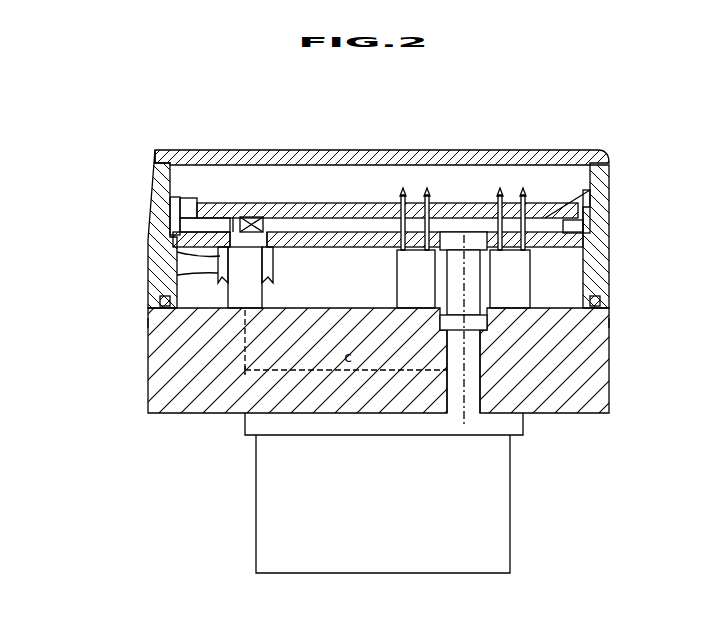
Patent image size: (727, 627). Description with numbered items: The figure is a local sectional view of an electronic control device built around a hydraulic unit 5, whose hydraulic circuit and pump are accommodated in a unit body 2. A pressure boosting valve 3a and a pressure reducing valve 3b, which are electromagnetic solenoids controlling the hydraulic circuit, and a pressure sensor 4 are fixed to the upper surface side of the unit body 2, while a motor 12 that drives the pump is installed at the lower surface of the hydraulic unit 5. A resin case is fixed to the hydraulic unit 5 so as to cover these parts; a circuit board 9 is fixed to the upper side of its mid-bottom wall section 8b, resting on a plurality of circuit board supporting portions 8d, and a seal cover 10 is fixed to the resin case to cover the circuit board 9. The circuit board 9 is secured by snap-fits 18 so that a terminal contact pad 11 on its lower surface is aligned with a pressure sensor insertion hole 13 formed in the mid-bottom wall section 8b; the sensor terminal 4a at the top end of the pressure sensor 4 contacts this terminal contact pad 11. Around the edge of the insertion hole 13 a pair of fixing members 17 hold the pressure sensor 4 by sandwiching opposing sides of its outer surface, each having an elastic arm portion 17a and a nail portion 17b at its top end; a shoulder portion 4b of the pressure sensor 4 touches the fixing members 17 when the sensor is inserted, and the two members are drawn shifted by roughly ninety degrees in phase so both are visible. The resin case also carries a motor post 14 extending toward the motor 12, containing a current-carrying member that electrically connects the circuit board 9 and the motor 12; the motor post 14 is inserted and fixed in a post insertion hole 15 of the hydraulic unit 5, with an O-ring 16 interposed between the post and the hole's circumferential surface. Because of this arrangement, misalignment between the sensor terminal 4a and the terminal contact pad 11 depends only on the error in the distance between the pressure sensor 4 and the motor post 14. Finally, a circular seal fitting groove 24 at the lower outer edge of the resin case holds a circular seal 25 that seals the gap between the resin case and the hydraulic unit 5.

The unit body 2 is at (153, 370).
The pressure boosting valve 3a is at (397, 279).
The pressure reducing valve 3b is at (533, 280).
The pressure sensor 4 is at (262, 295).
The sensor terminal 4a is at (277, 232).
The shoulder portion 4b is at (175, 240).
The hydraulic unit 5 is at (135, 400).
The mid-bottom wall section 8b is at (330, 232).
The circuit board supporting portions 8d is at (202, 215).
The circuit board 9 is at (372, 203).
The seal cover 10 is at (420, 163).
The terminal contact pad 11 is at (260, 217).
The motor 12 is at (262, 497).
The pressure sensor insertion hole 13 is at (233, 228).
The motor post 14 is at (470, 257).
The post insertion hole 15 is at (483, 386).
The O-ring 16 is at (487, 330).
The fixing members 17 is at (283, 267).
The elastic arm portion 17a is at (177, 257).
The nail portion 17b is at (177, 278).
The snap-fits 18 is at (168, 210).
The seal fitting groove 24 is at (147, 303).
The circular seal 25 is at (147, 323).